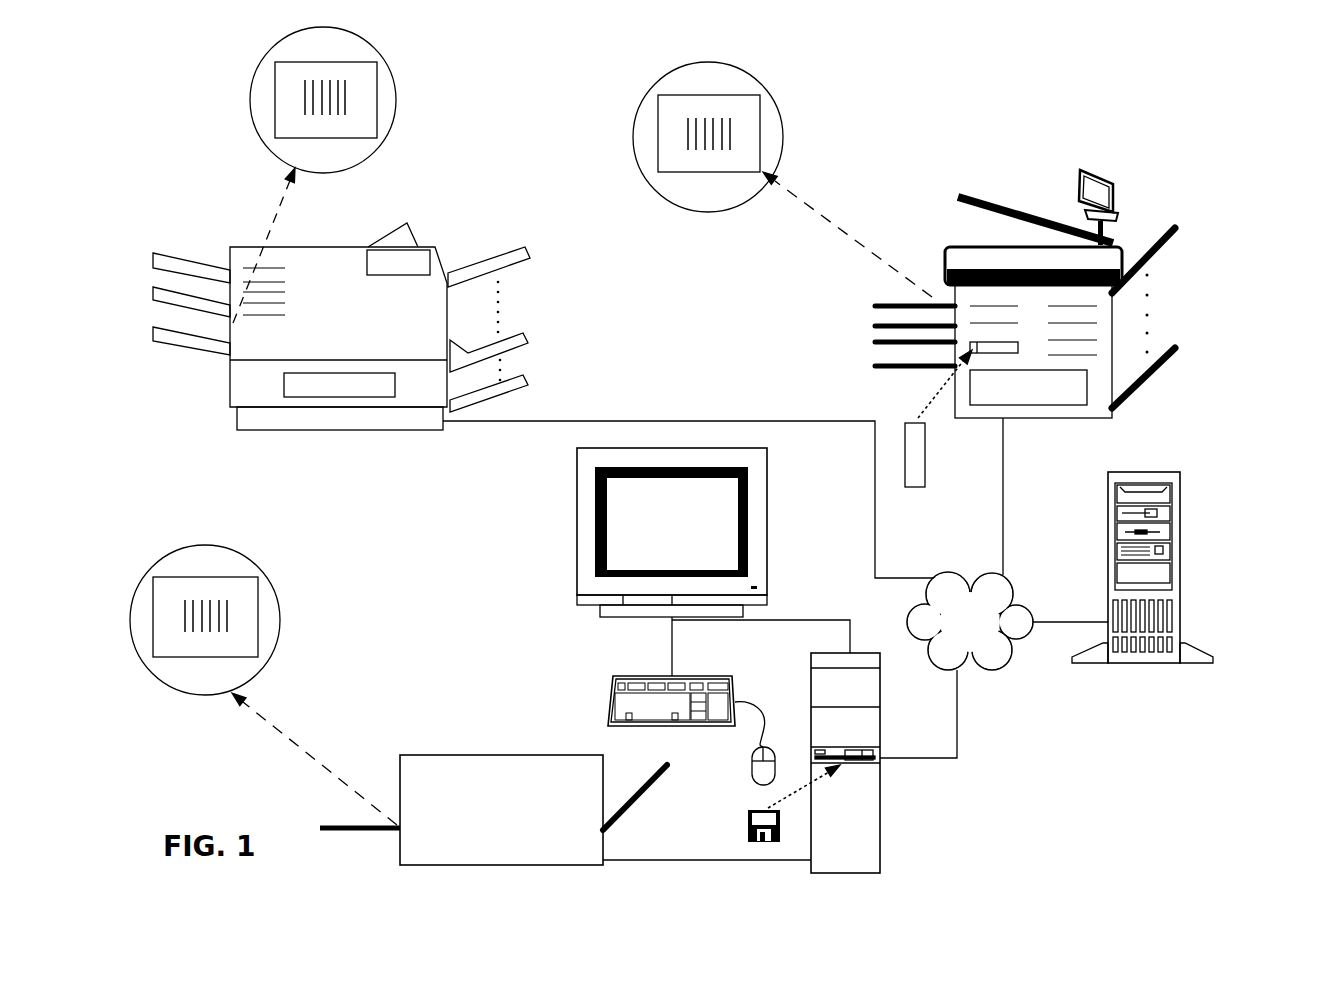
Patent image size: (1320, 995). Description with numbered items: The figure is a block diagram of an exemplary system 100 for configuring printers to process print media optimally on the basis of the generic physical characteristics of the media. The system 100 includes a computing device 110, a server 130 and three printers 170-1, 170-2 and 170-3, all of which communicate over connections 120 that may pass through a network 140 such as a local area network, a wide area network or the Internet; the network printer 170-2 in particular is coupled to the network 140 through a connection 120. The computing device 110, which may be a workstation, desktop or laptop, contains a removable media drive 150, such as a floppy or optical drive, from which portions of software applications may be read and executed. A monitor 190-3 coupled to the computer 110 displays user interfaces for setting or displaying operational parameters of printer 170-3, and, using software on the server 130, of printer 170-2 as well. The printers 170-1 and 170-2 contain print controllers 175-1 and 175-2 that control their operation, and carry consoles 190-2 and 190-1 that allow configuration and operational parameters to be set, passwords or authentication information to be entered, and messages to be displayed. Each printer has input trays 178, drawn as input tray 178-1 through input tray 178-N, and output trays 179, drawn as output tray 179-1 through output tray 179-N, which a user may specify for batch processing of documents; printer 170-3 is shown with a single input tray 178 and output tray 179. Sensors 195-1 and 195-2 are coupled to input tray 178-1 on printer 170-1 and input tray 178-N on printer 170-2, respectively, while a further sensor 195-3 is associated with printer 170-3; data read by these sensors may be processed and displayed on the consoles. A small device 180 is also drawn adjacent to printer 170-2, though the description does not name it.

The system 100 is at (218, 54).
The computing device 110 is at (766, 763).
The connections 120 is at (744, 535).
The server 130 is at (1152, 567).
The network 140 is at (988, 634).
The removable media drive 150 is at (774, 803).
The printer 170-1 is at (298, 435).
The printer 170-2 is at (944, 250).
The printer 170-3 is at (501, 810).
The print controller 175-1 is at (339, 385).
The print controller 175-2 is at (1028, 387).
The input tray 178 is at (360, 846).
The input tray 178-1 is at (157, 345).
The input tray 178-N is at (157, 248).
The output tray 179 is at (657, 783).
The output tray 179-1 is at (869, 381).
The output tray 179-N is at (866, 291).
The portable memory device 180 is at (939, 418).
The console 190-1 is at (1117, 192).
The console 190-2 is at (367, 263).
The monitor 190-3 is at (577, 483).
The sensor 195-1 is at (343, 175).
The sensor 195-2 is at (782, 179).
The sensor 195-3 is at (263, 685).